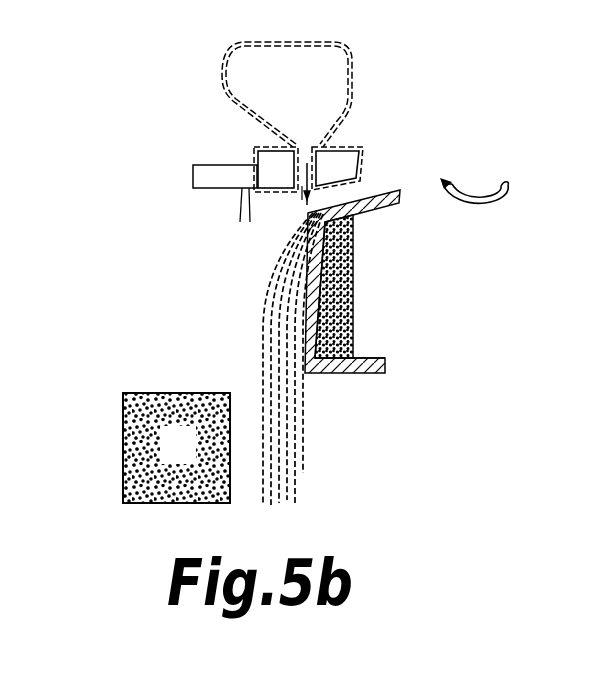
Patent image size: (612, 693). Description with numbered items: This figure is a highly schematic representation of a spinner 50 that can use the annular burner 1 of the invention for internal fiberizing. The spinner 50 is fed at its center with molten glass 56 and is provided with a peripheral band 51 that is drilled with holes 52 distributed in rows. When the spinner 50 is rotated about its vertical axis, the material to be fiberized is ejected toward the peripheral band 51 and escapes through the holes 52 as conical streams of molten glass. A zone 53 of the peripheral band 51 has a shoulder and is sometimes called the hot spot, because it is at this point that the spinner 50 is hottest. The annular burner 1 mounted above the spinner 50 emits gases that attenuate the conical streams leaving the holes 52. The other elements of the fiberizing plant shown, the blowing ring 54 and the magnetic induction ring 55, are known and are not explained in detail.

The balloon / stent assembly 1 is at (300, 106).
The spinner 50 is at (378, 222).
The peripheral band 51 is at (322, 272).
The holes 52 is at (300, 291).
The zone 53 is at (305, 217).
The blowing ring 54 is at (213, 174).
The magnetic induction ring 55 is at (192, 462).
The molten glass 56 is at (336, 375).